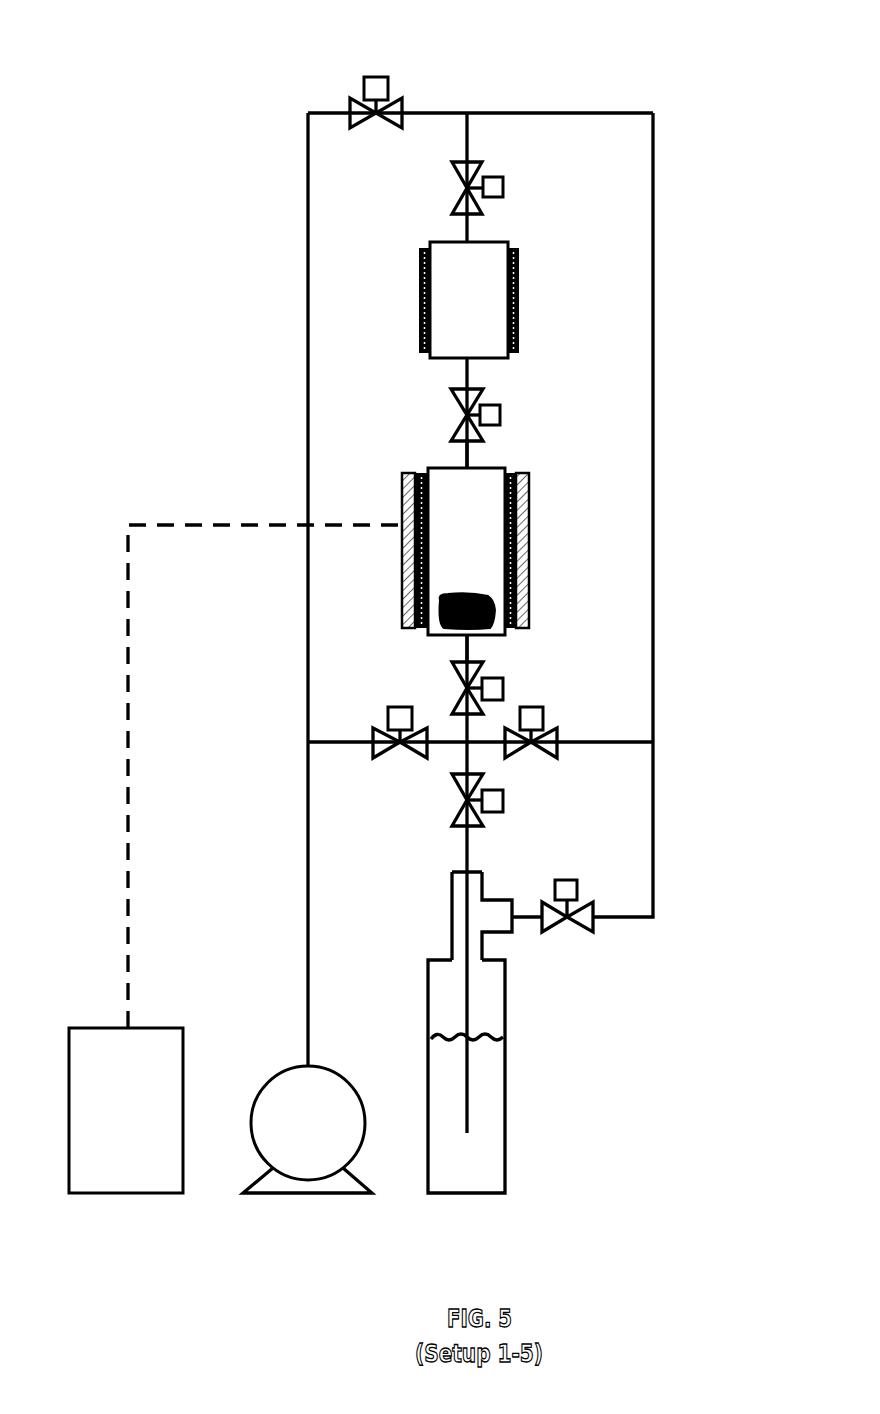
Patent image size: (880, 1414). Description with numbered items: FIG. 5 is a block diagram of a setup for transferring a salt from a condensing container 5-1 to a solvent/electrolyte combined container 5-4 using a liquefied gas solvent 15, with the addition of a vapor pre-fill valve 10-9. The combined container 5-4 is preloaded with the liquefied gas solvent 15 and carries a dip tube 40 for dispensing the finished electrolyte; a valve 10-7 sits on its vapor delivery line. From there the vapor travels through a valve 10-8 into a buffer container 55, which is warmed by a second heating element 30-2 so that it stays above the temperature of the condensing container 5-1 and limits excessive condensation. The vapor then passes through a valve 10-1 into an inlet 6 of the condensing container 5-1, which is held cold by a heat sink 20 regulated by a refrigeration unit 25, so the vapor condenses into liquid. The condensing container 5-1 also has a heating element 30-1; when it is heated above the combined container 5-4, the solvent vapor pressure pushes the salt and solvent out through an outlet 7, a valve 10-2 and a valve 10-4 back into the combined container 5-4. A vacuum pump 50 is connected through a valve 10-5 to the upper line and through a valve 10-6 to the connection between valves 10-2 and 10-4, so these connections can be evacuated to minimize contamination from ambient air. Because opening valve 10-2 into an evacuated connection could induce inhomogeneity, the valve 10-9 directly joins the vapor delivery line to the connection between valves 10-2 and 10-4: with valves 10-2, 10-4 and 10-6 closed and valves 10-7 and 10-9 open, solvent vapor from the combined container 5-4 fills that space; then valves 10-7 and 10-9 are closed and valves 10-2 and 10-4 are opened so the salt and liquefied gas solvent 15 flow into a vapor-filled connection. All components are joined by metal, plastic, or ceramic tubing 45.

The condensing container 5-1 is at (490, 463).
The solvent/electrolyte combined container 5-4 is at (505, 1070).
The inlet 6 is at (445, 447).
The outlet 7 is at (465, 638).
The valve 10-1 is at (497, 403).
The valve 10-2 is at (507, 682).
The valve 10-4 is at (503, 798).
The valve 10-5 is at (383, 75).
The valve 10-6 is at (422, 750).
The valve 10-7 is at (577, 927).
The valve 10-8 is at (503, 183).
The valve 10-9 is at (542, 722).
The liquefied gas solvent 15 is at (490, 1158).
The heat sink 20 is at (517, 590).
The refrigeration unit 25 is at (183, 1088).
The heating element 30-1 is at (517, 532).
The second heating element 30-2 is at (518, 327).
The dip tube 40 is at (460, 943).
The tubing 45 is at (653, 572).
The vacuum pump 50 is at (317, 1067).
The buffer container 55 is at (490, 243).